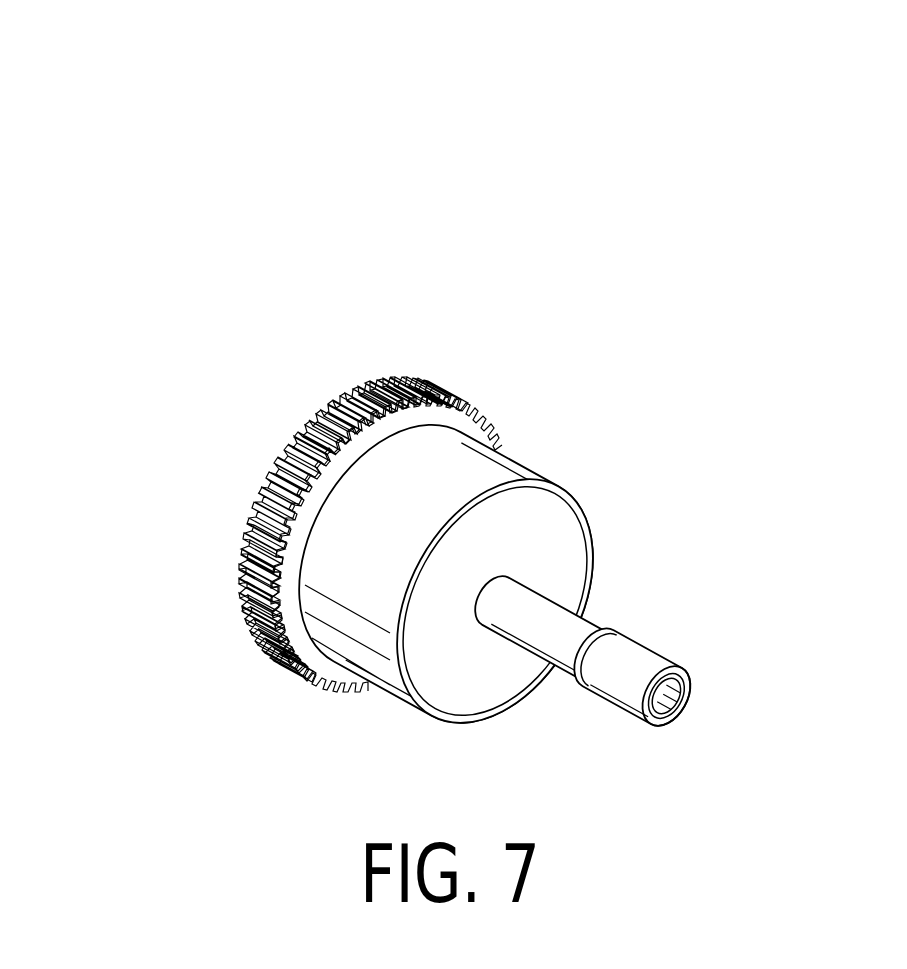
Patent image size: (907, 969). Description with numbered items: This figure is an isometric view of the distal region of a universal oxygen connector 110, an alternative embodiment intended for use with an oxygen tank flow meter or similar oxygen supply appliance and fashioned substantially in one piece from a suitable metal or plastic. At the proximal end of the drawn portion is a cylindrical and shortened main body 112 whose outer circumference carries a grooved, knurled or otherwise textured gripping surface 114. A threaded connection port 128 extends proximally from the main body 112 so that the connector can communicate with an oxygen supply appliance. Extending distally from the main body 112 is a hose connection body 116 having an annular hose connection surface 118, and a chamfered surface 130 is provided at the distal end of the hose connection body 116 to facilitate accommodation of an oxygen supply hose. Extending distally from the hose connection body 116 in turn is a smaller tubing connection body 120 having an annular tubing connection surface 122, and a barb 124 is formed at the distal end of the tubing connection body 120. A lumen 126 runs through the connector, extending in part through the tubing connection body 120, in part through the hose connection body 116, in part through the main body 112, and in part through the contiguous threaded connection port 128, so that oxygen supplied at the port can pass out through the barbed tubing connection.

The universal oxygen connector 110 is at (708, 186).
The main body 112 is at (415, 417).
The gripping surface 114 is at (247, 612).
The hose connection body 116 is at (520, 460).
The hose connection surface 118 is at (472, 478).
The tubing connection body 120 is at (590, 625).
The tubing connection surface 122 is at (550, 613).
The barb 124 is at (632, 658).
The lumen 126 is at (670, 710).
The threaded connection port 128 is at (277, 447).
The chamfered surface 130 is at (425, 572).